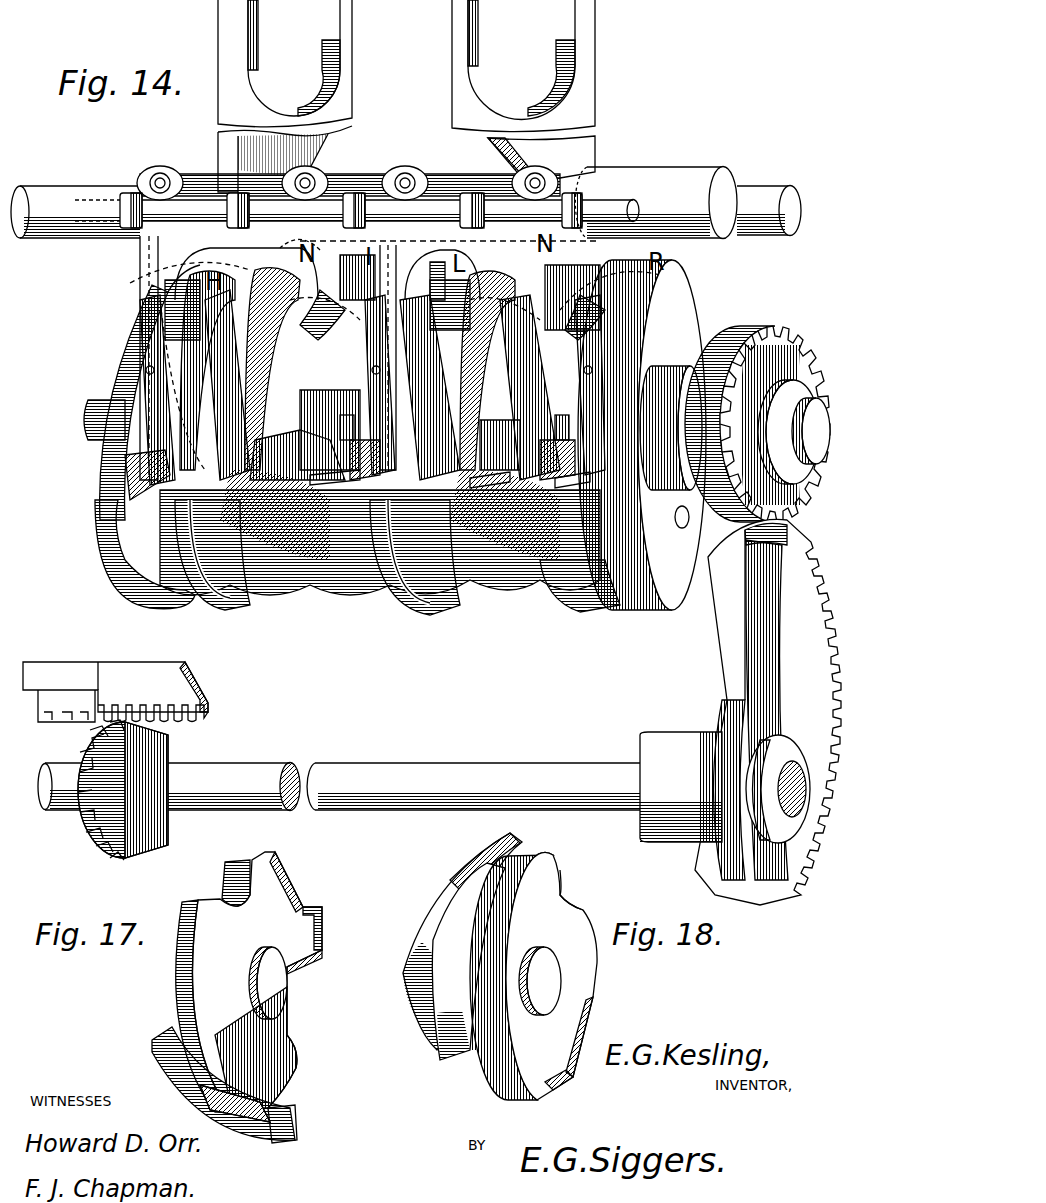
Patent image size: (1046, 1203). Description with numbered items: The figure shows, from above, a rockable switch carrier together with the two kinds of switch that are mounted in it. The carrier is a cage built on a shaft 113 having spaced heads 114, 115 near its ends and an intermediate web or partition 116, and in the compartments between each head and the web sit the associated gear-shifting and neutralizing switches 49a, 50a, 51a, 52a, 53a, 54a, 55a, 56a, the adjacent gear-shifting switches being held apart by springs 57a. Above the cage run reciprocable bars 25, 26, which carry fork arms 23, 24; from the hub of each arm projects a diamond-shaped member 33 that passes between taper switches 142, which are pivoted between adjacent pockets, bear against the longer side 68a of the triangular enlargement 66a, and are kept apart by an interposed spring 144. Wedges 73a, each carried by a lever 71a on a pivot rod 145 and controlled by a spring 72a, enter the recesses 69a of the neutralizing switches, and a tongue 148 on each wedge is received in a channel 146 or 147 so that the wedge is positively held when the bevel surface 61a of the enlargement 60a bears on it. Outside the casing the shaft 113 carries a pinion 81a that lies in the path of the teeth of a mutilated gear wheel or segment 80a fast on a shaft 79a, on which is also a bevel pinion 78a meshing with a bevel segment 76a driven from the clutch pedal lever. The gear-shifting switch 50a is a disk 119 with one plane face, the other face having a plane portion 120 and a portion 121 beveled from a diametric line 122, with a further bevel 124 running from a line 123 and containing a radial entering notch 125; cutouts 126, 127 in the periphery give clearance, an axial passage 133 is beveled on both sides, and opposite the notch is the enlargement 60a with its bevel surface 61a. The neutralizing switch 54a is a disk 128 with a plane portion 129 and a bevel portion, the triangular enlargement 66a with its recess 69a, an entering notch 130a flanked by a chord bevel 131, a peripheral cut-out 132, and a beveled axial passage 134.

In FIG. 14, the fork arm 24 is at (226, 150).
In FIG. 14, the fork arm 23 is at (580, 152).
In FIG. 14, the pivot rod 145 is at (90, 208).
In FIG. 14, the spring 72a is at (158, 178).
In FIG. 14, the reciprocable bar 26 is at (676, 192).
In FIG. 14, the reciprocable bar 25 is at (760, 190).
In FIG. 14, the lever 71a is at (148, 258).
In FIG. 14, the diamond member 33 is at (308, 258).
In FIG. 14, the taper switch 142 is at (160, 300).
In FIG. 14, the intermediate web 116 is at (440, 290).
In FIG. 14, the head 115 is at (145, 345).
In FIG. 14, the tongue 148 is at (118, 408).
In FIG. 14, the recess 69a is at (158, 385).
In FIG. 18, the recess 69a is at (460, 1000).
In FIG. 14, the longer side of projection 68a is at (212, 378).
In FIG. 18, the longer side of projection 68a is at (458, 875).
In FIG. 14, the interposed spring 144 is at (340, 322).
In FIG. 14, the neutralizing switch 54a is at (296, 443).
In FIG. 18, the neutralizing switch 54a is at (596, 972).
In FIG. 14, the cam 53a is at (210, 440).
In FIG. 14, the cam 55a is at (430, 387).
In FIG. 14, the cam 56a is at (519, 387).
In FIG. 14, the wedge 73a is at (560, 452).
In FIG. 14, the spring 57a is at (292, 590).
In FIG. 14, the ring 49a is at (233, 598).
In FIG. 14, the channel 147 is at (398, 610).
In FIG. 14, the gear-shifting switch 50a is at (338, 595).
In FIG. 17, the gear-shifting switch 50a is at (176, 1006).
In FIG. 14, the cam 51a is at (468, 595).
In FIG. 14, the cam 52a is at (562, 595).
In FIG. 14, the channel 146 is at (115, 572).
In FIG. 14, the head 114 is at (672, 312).
In FIG. 14, the pinion 81a is at (780, 336).
In FIG. 14, the shaft 113 is at (816, 431).
In FIG. 14, the mutilated gear wheel 80a is at (783, 640).
In FIG. 14, the bevel segment 76a is at (198, 705).
In FIG. 14, the bevel pinion 78a is at (180, 748).
In FIG. 14, the shaft 79a is at (436, 770).
In FIG. 17, the beveled surface portion 121 is at (257, 982).
In FIG. 17, the further bevel 124 is at (278, 858).
In FIG. 17, the cutout 126 is at (220, 897).
In FIG. 17, the line 123 is at (298, 892).
In FIG. 17, the peripheral entering notch 125 is at (310, 905).
In FIG. 17, the disk 119 is at (305, 962).
In FIG. 17, the axial passage 133 is at (260, 978).
In FIG. 17, the diametric line 122 is at (250, 1020).
In FIG. 17, the plane face portion 120 is at (288, 1012).
In FIG. 17, the cutout 127 is at (290, 1042).
In FIG. 17, the bevel surface 61a is at (190, 1070).
In FIG. 17, the enlargement 60a is at (226, 1138).
In FIG. 18, the triangular enlargement 66a is at (425, 945).
In FIG. 18, the disk 128 is at (537, 915).
In FIG. 18, the cut-out portion 132 is at (572, 908).
In FIG. 18, the axial passage 134 is at (548, 975).
In FIG. 18, the chord bevel 131 is at (594, 1030).
In FIG. 18, the peripheral entering notch 130a is at (570, 1062).
In FIG. 18, the plane portion 129 is at (470, 1075).